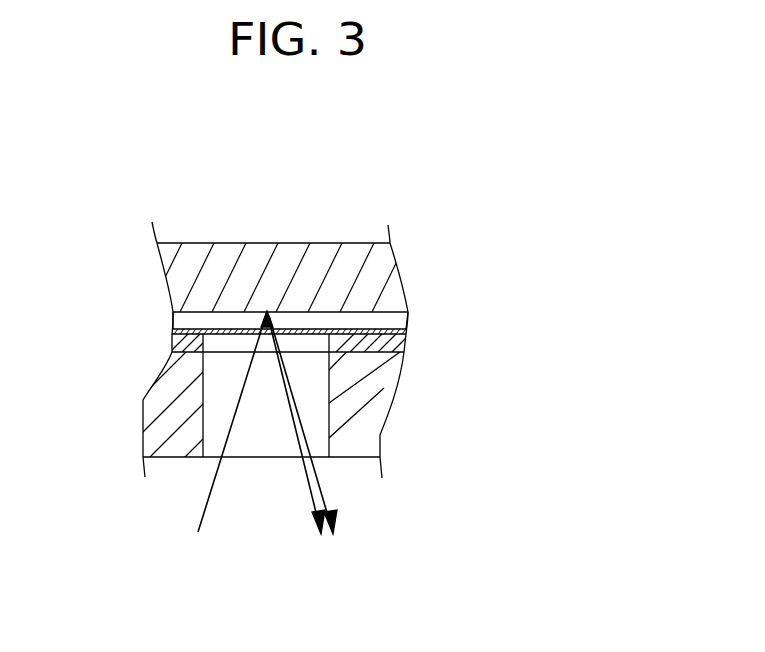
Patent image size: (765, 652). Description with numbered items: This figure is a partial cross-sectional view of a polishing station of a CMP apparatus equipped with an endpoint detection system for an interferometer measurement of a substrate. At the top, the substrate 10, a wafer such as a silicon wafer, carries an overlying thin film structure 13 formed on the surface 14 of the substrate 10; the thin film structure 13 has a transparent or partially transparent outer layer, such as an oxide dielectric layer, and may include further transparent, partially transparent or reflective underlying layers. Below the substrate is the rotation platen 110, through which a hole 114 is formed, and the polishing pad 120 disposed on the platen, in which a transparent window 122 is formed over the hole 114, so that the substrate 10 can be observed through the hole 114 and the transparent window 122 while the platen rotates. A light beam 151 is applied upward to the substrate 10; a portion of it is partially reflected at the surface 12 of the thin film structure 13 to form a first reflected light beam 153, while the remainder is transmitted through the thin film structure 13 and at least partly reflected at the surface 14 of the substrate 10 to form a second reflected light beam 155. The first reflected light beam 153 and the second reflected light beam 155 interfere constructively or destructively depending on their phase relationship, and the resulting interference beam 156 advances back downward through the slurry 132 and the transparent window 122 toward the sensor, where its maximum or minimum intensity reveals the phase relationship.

The substrate 10 is at (385, 262).
The surface of the substrate 14 is at (405, 303).
The thin film structure 13 is at (392, 319).
The surface of the thin film structure 12 is at (407, 333).
The transparent window 122 is at (213, 343).
The polishing pad 120 is at (395, 346).
The rotation platen 110 is at (364, 441).
The hole 114 is at (215, 408).
The slurry 132 is at (178, 322).
The light beam 151 is at (202, 518).
The first reflected light beam 153 is at (305, 481).
The second reflected light beam 155 is at (322, 492).
The interference beam 156 is at (350, 547).